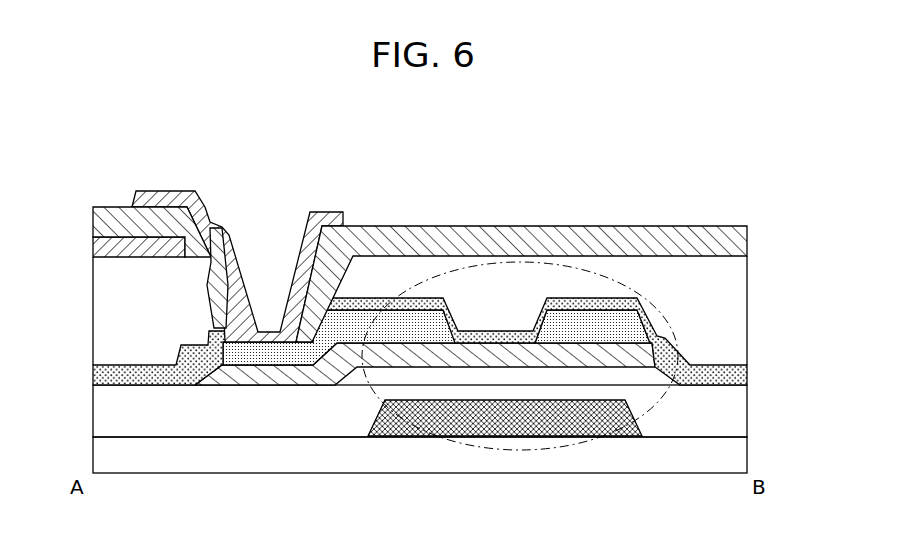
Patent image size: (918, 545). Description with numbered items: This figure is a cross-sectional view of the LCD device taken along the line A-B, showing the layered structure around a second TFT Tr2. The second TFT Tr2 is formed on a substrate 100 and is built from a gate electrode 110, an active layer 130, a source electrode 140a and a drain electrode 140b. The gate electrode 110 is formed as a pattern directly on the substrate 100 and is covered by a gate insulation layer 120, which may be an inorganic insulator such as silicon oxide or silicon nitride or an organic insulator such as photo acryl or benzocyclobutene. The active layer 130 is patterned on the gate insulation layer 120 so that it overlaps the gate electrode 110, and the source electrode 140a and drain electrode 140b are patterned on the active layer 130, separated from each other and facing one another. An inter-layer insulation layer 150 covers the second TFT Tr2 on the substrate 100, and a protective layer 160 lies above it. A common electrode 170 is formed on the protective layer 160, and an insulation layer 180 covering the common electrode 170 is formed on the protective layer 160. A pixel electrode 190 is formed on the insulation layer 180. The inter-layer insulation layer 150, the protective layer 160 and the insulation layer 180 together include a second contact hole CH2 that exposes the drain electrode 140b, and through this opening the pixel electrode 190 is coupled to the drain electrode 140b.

The substrate 100 is at (737, 454).
The gate electrode 110 is at (550, 437).
The gate insulation layer 120 is at (737, 412).
The active layer 130 is at (657, 338).
The source electrode 140a is at (593, 317).
The drain electrode 140b is at (412, 322).
The inter-layer insulation layer 150 is at (745, 373).
The protective layer 160 is at (737, 299).
The common electrode 170 is at (93, 247).
The insulation layer 180 is at (743, 238).
The pixel electrode 190 is at (130, 197).
The second contact hole CH2 is at (262, 292).
The second TFT Tr2 is at (489, 450).